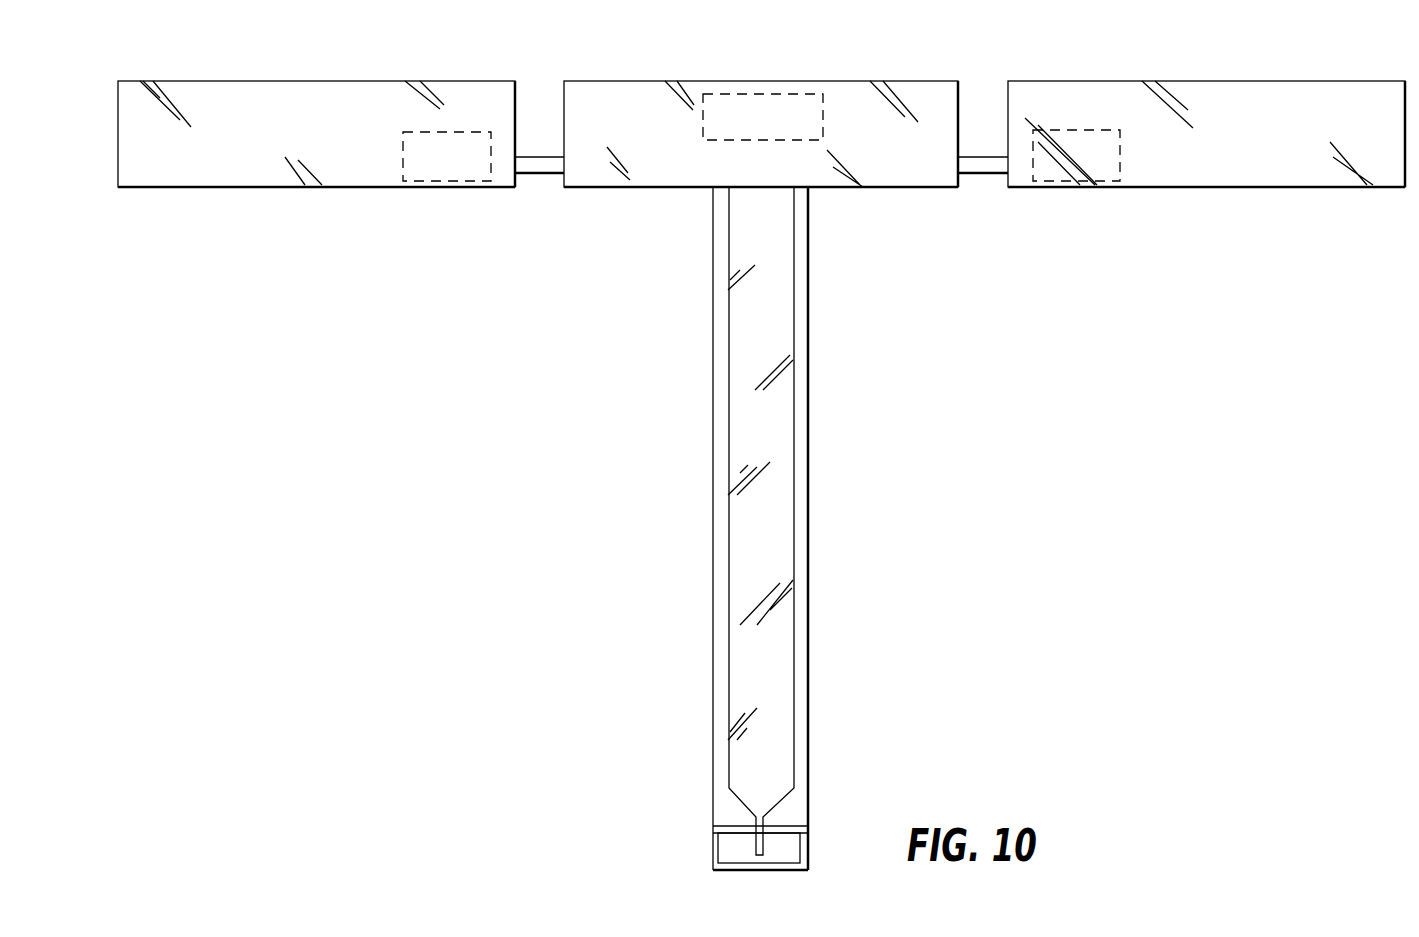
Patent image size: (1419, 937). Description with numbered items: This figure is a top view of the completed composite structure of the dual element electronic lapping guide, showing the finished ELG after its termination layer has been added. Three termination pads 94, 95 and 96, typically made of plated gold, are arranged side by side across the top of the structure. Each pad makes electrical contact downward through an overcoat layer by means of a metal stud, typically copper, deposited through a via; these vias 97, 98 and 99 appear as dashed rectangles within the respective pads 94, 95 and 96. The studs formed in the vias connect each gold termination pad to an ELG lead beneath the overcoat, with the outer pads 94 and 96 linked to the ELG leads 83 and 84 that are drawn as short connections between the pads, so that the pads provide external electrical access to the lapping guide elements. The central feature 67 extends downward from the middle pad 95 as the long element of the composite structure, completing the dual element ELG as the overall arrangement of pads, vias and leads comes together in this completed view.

The termination pad 94 is at (441, 80).
The termination pad 95 is at (921, 80).
The termination pad 96 is at (1231, 80).
The via 97 is at (428, 172).
The via 98 is at (780, 92).
The via 99 is at (1110, 172).
The ELG lead 83 is at (545, 175).
The ELG lead 84 is at (986, 175).
The vertical support column 67 is at (780, 515).